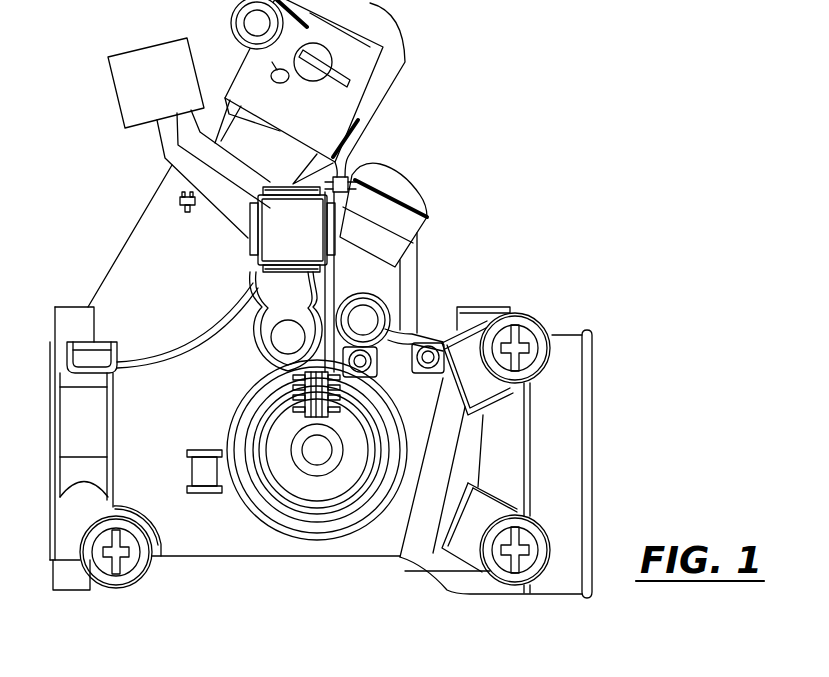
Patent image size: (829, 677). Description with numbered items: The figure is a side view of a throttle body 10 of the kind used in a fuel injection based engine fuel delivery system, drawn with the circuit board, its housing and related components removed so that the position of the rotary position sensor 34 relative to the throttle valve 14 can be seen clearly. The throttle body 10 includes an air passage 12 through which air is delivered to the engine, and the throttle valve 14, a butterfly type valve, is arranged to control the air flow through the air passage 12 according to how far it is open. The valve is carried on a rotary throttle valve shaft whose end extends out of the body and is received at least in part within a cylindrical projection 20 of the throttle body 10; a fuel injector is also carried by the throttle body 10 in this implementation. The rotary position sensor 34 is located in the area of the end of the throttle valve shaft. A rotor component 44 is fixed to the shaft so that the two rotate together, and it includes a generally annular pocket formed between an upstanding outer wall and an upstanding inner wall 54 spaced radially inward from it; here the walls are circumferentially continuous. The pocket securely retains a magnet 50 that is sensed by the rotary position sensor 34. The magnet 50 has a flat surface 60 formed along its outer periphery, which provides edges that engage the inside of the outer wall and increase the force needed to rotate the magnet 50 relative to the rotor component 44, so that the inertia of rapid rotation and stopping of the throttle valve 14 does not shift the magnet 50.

The throttle body 10 is at (468, 112).
The air passage 12 is at (593, 508).
The throttle valve 14 is at (277, 527).
The cylindrical projection 20 is at (365, 515).
The rotary position sensor 34 is at (319, 377).
The rotor component 44 is at (343, 515).
The magnet 50 is at (313, 490).
The inner wall 54 is at (292, 450).
The flat surface 60 is at (280, 482).